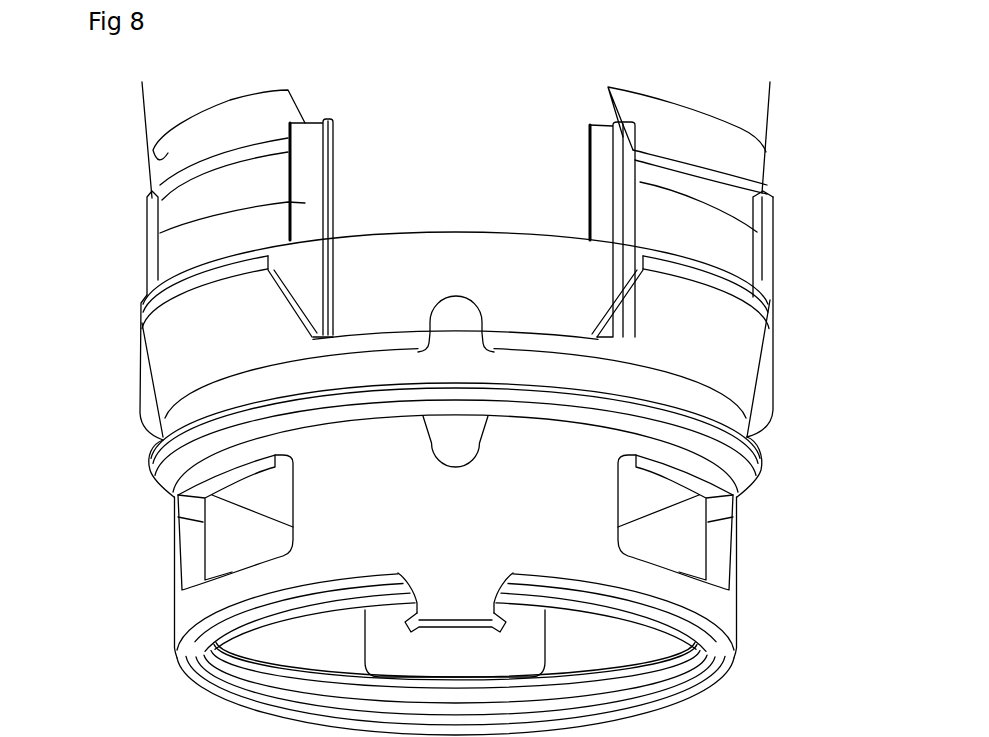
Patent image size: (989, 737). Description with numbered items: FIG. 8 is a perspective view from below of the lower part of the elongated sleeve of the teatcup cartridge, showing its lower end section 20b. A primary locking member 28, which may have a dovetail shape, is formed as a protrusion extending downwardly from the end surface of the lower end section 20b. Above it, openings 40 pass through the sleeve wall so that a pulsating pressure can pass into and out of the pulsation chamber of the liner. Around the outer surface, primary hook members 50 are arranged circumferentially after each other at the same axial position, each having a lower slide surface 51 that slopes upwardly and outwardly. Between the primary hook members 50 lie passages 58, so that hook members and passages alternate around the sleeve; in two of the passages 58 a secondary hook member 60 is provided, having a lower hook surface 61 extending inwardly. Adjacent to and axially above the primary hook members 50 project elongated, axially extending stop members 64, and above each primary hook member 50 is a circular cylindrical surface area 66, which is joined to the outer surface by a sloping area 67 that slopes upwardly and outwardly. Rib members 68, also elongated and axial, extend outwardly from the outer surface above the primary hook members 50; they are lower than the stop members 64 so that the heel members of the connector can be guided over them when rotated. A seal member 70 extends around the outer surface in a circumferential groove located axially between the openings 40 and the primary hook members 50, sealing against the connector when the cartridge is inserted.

The lower end section 20b is at (173, 604).
The primary locking member 28 is at (406, 620).
The opening 40 is at (188, 533).
The primary hook member 50 is at (143, 302).
The lower slide surface 51 is at (168, 341).
The passage 58 is at (452, 199).
The secondary hook member 60 is at (140, 404).
The lower hook surface 61 is at (152, 428).
The stop member 64 is at (165, 232).
The surface area 66 is at (200, 208).
The sloping area 67 is at (150, 195).
The rib member 68 is at (147, 195).
The seal member 70 is at (752, 458).